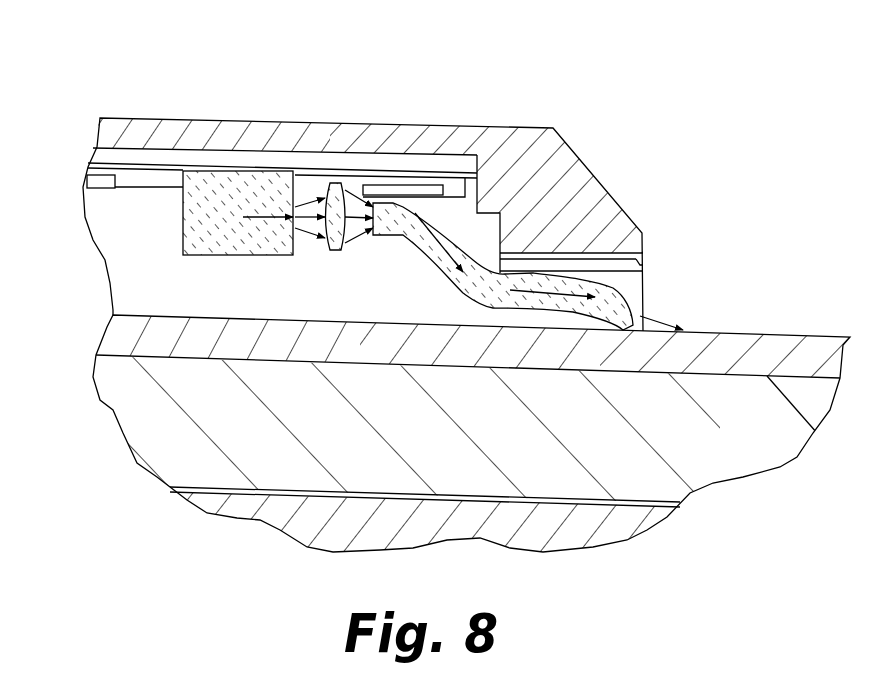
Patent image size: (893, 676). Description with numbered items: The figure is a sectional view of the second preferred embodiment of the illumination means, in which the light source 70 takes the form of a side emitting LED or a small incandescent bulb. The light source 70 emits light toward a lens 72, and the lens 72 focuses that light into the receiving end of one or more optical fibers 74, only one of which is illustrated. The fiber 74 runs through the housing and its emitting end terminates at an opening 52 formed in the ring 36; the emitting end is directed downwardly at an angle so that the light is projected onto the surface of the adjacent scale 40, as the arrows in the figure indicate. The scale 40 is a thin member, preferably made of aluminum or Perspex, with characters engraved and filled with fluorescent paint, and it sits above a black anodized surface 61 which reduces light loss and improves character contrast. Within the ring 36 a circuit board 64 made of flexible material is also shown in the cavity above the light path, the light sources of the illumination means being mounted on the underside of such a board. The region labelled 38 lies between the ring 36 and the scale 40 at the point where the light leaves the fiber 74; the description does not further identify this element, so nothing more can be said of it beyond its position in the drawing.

The ring 36 is at (205, 132).
The circuit board 64 is at (388, 190).
The optical fiber 74 is at (450, 255).
The opening 52 is at (640, 263).
The gap opening 38 is at (712, 300).
The scale 40 is at (755, 330).
The black anodized surface 61 is at (812, 377).
The light source 70 is at (183, 215).
The lens 72 is at (333, 250).